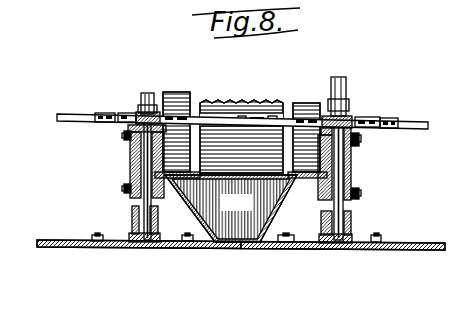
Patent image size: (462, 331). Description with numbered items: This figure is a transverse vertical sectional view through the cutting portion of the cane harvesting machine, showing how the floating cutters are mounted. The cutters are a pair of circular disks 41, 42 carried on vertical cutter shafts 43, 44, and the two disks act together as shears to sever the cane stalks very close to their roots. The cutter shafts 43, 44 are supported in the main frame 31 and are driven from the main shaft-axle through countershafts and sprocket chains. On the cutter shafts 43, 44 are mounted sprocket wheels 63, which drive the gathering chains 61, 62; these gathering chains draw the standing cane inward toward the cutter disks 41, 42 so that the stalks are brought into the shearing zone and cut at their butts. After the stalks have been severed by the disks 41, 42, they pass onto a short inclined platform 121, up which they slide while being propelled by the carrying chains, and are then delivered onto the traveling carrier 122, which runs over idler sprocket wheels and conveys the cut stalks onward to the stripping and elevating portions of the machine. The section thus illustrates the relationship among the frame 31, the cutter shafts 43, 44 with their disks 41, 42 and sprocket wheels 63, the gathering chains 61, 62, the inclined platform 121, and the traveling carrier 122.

The main frame 31 is at (176, 92).
The circular disk cutter 41 is at (419, 246).
The circular disk cutter 42 is at (63, 240).
The cutter shaft 43 is at (347, 93).
The cutter shaft 44 is at (143, 99).
The gathering chain 61 is at (389, 123).
The gathering chain 62 is at (100, 120).
The sprocket wheel 63 is at (126, 122).
The inclined platform 121 is at (231, 208).
The traveling carrier 122 is at (244, 107).